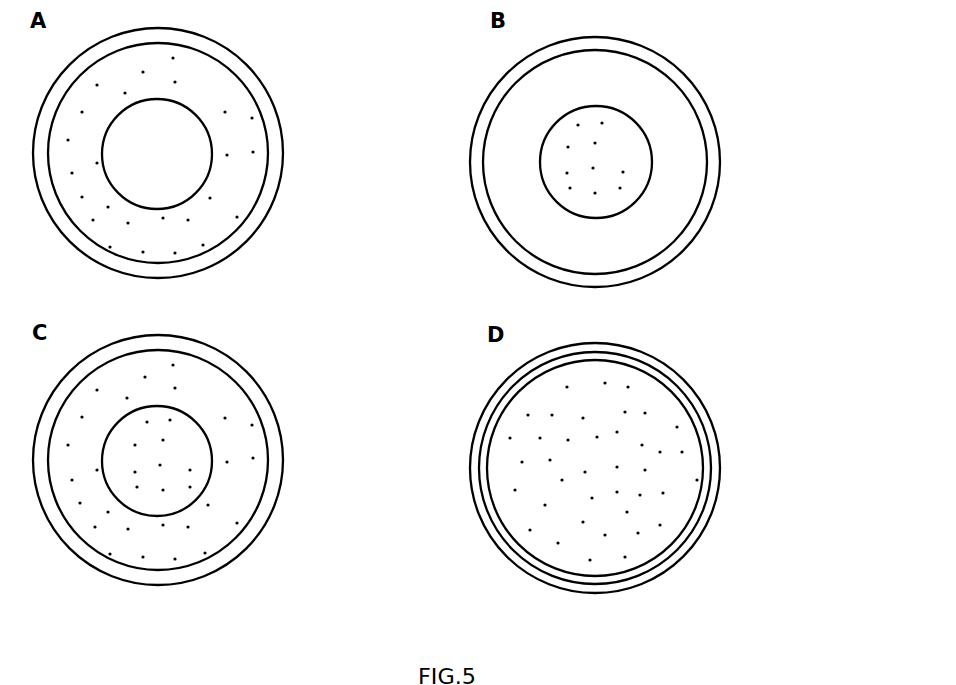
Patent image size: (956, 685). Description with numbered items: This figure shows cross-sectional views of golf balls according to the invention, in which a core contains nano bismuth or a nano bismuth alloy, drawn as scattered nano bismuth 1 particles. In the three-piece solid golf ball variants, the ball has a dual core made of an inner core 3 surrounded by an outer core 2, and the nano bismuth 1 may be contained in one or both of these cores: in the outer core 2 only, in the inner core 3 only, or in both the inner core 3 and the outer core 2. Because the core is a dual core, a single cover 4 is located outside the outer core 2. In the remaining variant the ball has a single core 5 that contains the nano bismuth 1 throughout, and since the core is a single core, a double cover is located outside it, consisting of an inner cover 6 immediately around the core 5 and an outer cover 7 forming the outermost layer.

The nano bismuth particles 1 is at (718, 67).
The outer core 2 is at (732, 127).
The inner core 3 is at (745, 205).
The cover 4 is at (762, 265).
The core 5 is at (618, 450).
The inner cover 6 is at (697, 508).
The outer cover 7 is at (683, 550).